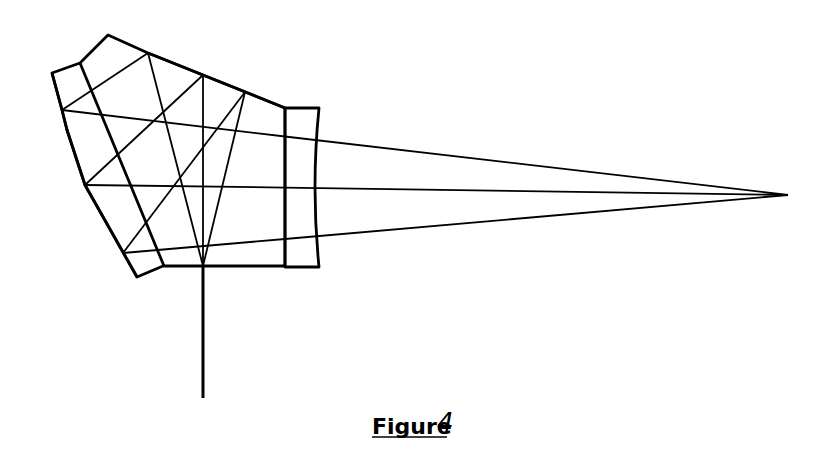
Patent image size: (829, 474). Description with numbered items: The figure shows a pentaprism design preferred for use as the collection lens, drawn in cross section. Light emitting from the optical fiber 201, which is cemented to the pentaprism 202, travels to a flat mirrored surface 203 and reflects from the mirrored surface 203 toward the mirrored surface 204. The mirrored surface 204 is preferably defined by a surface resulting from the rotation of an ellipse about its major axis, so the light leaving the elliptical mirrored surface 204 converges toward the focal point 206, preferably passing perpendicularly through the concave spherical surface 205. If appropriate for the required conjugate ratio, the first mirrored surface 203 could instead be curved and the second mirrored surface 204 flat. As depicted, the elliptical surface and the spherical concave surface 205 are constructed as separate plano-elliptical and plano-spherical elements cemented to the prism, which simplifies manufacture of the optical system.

The optical fiber 201 is at (203, 378).
The pentaprism 202 is at (168, 156).
The flat mirrored surface 203 is at (216, 78).
The elliptical mirrored surface 204 is at (84, 186).
The concave spherical surface 205 is at (312, 187).
The focal point 206 is at (546, 188).